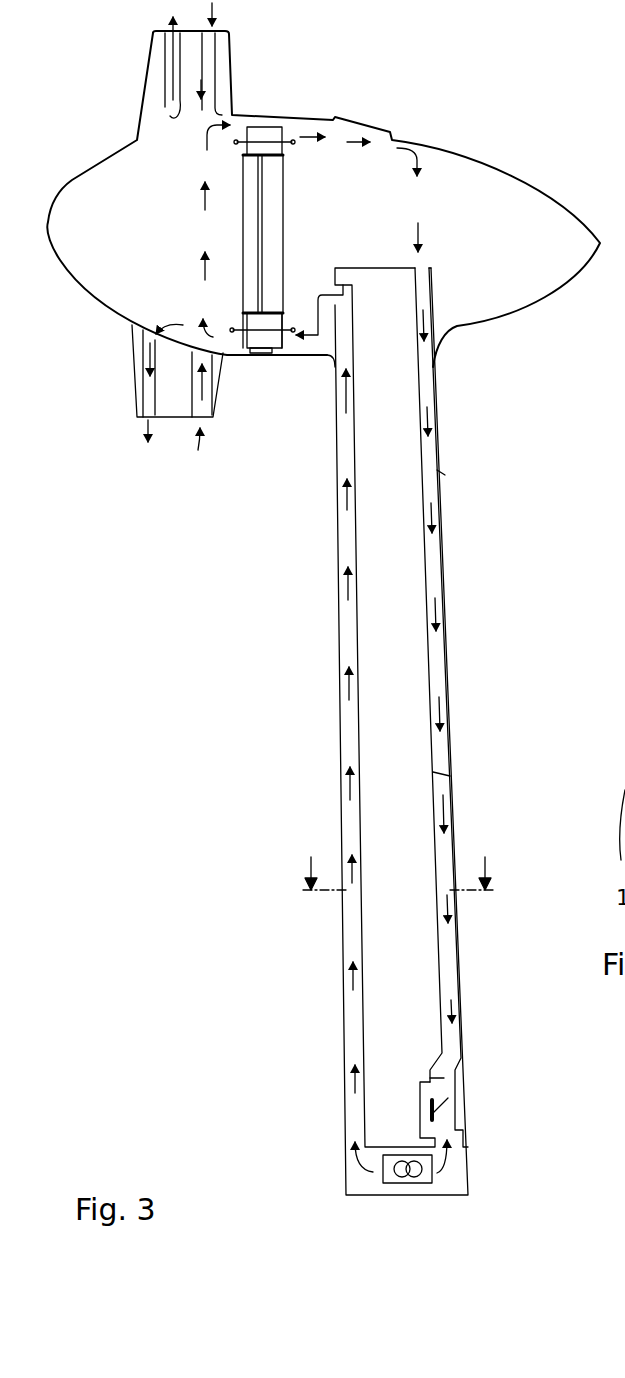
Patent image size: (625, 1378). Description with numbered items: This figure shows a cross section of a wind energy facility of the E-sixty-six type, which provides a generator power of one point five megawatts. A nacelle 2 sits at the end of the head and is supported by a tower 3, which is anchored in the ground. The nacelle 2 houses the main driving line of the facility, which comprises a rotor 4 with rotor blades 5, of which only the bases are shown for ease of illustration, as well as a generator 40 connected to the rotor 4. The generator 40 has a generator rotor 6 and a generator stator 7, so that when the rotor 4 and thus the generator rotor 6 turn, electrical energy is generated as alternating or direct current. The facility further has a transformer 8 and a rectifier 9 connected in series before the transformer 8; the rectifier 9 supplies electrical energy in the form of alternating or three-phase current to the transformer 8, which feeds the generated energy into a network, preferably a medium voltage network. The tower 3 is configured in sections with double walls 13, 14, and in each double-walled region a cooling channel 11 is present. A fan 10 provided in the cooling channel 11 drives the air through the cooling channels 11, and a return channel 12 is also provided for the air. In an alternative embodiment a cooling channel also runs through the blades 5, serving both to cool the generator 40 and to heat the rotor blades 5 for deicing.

The nacelle 2 is at (515, 208).
The tower 3 is at (448, 572).
The rotor 4 is at (66, 190).
The rotor blades 5 is at (150, 60).
The generator rotor 6 is at (240, 357).
The generator stator 7 is at (266, 346).
The transformer 8 is at (433, 1176).
The rectifier 9 is at (448, 1108).
The fan 10 is at (447, 1075).
The cooling channel 11 is at (104, 95).
The return channel 12 is at (350, 716).
The double wall 13 is at (443, 636).
The double wall 14 is at (433, 773).
The generator 40 is at (268, 150).